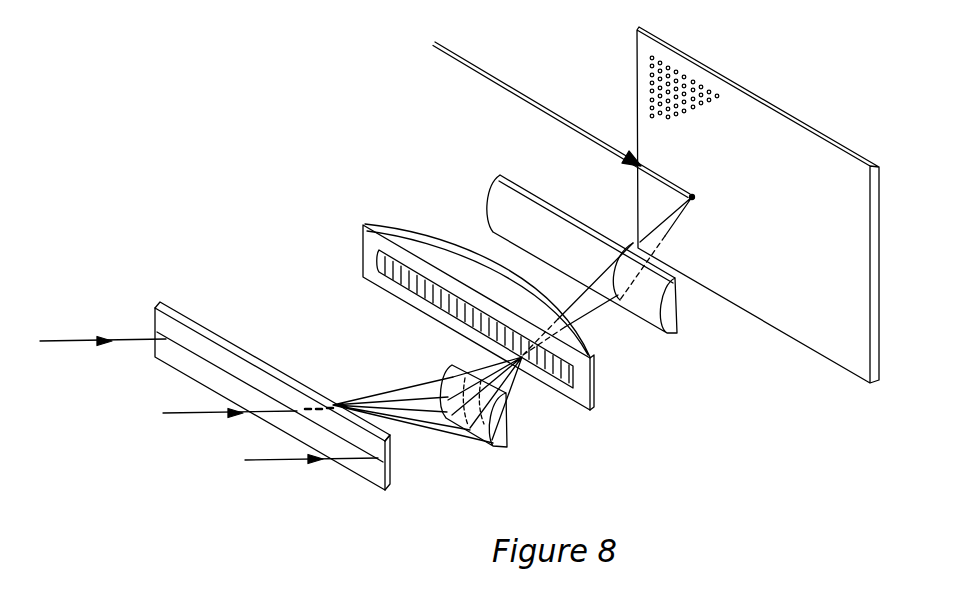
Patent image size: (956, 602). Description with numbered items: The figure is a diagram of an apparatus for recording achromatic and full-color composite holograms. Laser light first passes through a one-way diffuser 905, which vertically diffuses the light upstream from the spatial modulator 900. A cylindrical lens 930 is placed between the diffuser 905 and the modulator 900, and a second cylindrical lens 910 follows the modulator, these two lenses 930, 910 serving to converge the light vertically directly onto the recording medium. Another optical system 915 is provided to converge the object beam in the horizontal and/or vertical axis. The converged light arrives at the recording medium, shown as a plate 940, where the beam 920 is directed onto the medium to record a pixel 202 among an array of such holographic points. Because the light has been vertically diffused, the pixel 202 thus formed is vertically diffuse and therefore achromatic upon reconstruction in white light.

The one-way diffuser 905 is at (383, 495).
The cylindrical lens 930 is at (490, 443).
The spatial modulator 900 is at (566, 398).
The optical system 915 is at (595, 392).
The cylindrical lens 910 is at (678, 334).
The incident beam 920 is at (467, 58).
The pixel 202 is at (668, 65).
The sample plate 940 is at (848, 363).